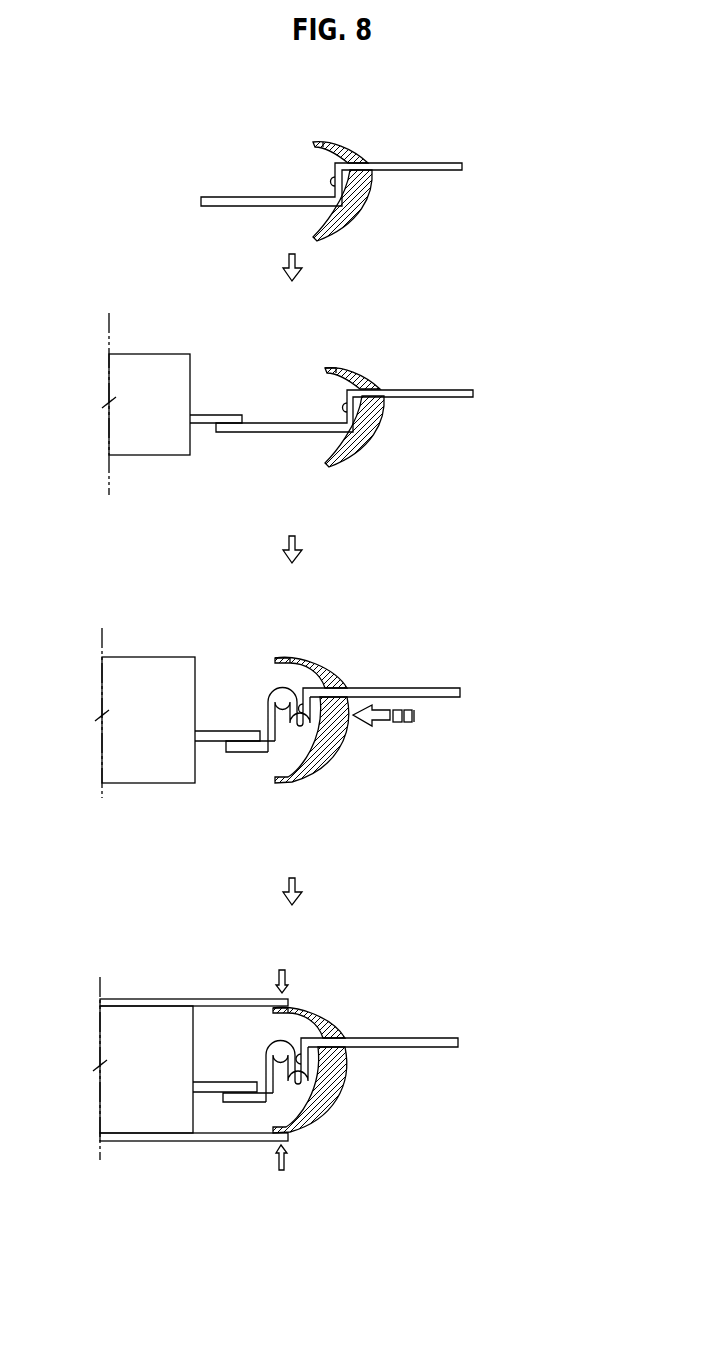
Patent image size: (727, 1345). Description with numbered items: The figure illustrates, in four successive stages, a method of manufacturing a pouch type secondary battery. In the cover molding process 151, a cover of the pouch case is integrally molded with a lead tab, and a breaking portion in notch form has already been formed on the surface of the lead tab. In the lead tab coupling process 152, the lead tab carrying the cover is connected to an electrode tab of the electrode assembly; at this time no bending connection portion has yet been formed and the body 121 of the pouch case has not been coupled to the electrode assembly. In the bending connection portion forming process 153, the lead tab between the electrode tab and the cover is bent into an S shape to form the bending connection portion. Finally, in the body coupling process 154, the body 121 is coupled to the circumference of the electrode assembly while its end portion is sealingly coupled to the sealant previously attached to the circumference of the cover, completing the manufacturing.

The body 121 is at (120, 999).
The cover molding process 151 is at (507, 149).
The lead tab coupling process 152 is at (507, 343).
The bending connection portion forming process 153 is at (507, 627).
The body coupling process 154 is at (507, 970).